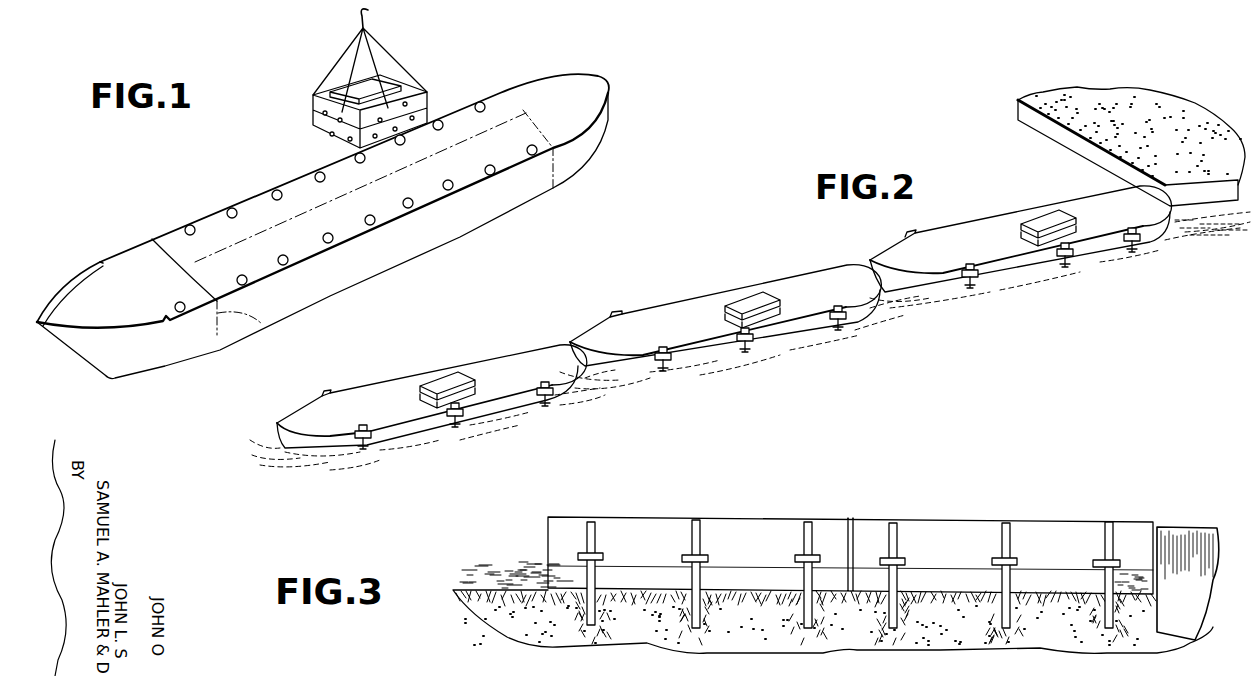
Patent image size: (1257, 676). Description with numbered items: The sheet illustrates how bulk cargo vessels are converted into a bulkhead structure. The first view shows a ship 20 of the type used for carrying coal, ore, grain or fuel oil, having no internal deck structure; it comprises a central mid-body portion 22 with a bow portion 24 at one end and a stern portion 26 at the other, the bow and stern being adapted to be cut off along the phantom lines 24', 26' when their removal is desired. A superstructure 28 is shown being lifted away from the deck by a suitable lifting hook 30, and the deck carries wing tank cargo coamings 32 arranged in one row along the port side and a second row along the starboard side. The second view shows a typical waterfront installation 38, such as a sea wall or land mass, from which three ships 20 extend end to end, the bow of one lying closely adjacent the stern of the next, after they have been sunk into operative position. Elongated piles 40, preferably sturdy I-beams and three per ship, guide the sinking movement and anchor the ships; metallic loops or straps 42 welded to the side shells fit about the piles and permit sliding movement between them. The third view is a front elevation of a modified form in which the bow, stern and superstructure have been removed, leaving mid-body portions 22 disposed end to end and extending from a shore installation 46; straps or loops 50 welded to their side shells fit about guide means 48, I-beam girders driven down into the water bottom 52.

In FIG. 1, the ship 20 is at (480, 242).
In FIG. 2, the ship 20 is at (510, 425).
In FIG. 1, the mid-body portion 22 is at (384, 266).
In FIG. 3, the mid-body portion 22 is at (668, 527).
In FIG. 1, the bow portion 24 is at (184, 329).
In FIG. 1, the phantom line 24' is at (262, 329).
In FIG. 1, the stern portion 26 is at (598, 140).
In FIG. 1, the phantom line 26' is at (550, 134).
In FIG. 1, the superstructure 28 is at (436, 95).
In FIG. 1, the lifting hook 30 is at (372, 22).
In FIG. 1, the wing tank cargo coamings 32 is at (229, 210).
In FIG. 2, the waterfront installation 38 is at (1125, 170).
In FIG. 2, the piles 40 is at (455, 432).
In FIG. 2, the metallic loops or straps 42 is at (366, 431).
In FIG. 3, the shore installation 46 is at (1173, 533).
In FIG. 3, the guide means 48 is at (592, 538).
In FIG. 3, the straps or loops 50 is at (682, 558).
In FIG. 3, the water bottom 52 is at (494, 590).